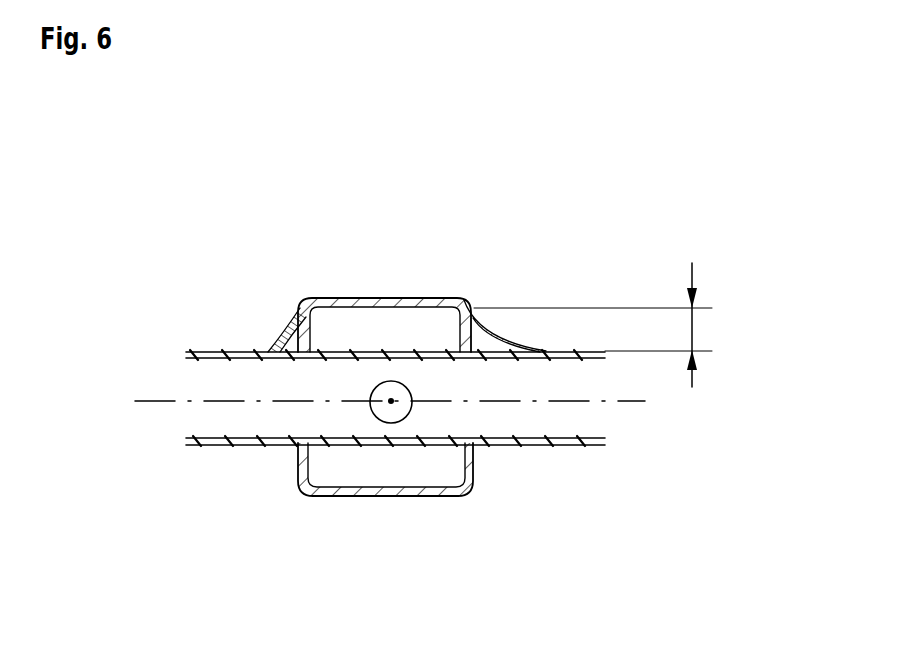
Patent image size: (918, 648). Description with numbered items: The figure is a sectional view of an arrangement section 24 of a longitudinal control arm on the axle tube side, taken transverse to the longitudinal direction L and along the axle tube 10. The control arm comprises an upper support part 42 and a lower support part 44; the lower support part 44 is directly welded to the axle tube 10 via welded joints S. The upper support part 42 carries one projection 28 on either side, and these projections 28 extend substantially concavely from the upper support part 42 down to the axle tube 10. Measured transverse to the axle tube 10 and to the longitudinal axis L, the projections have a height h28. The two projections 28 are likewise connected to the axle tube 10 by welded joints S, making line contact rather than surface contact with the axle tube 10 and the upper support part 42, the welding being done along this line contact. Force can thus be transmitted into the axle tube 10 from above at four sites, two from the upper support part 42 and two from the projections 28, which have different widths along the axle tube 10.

The axle tube 10 is at (568, 355).
The arrangement section 24 is at (347, 267).
The projection 28 is at (283, 351).
The upper support part 42 is at (413, 298).
The lower support part 44 is at (410, 492).
The longitudinal direction L is at (391, 401).
The welded joint S is at (303, 306).
The height of the projections h28 is at (693, 268).